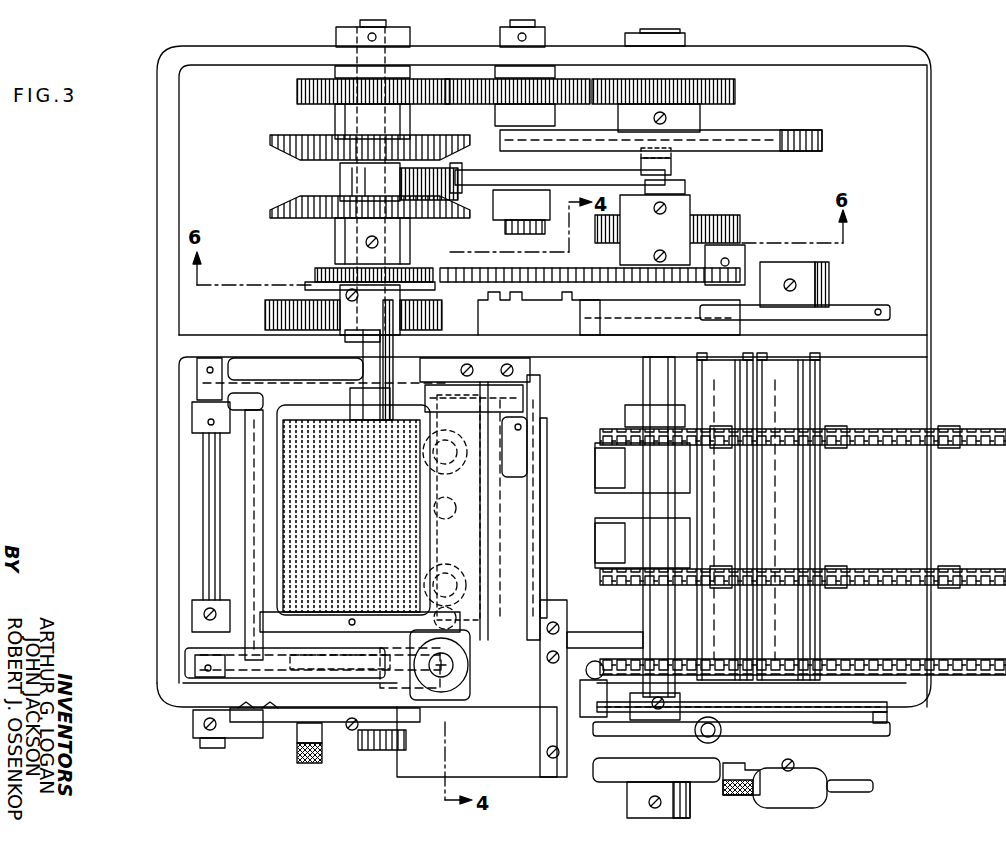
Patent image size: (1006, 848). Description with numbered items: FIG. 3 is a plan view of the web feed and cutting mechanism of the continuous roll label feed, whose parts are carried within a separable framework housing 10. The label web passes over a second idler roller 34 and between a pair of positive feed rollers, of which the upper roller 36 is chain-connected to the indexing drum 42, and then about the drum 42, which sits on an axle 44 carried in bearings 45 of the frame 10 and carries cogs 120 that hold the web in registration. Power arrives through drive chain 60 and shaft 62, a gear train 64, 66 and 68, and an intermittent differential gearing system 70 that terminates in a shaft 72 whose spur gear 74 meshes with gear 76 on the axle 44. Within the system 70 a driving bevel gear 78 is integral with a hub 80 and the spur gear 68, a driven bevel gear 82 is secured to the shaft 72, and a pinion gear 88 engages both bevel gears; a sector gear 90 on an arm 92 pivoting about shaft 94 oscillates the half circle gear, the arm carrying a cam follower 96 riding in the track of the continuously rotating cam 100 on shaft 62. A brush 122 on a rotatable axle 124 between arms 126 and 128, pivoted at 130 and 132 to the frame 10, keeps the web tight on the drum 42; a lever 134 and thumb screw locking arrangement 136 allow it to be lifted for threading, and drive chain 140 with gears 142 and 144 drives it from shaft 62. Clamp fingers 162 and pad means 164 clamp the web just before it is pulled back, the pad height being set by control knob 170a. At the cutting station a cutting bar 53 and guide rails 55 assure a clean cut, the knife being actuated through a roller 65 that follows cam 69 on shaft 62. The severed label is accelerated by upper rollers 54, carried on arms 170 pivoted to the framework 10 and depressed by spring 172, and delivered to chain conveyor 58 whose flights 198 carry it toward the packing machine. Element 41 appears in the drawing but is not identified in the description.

The framework housing 10 is at (930, 347).
The second idler roller 34 is at (812, 507).
The upper feed roller 36 is at (706, 492).
The flange 41 is at (305, 288).
The indexing drum 42 is at (250, 527).
The axle 44 is at (345, 336).
The bearings 45 is at (298, 668).
The cutting bar 53 is at (470, 375).
The upper rollers 54 is at (636, 512).
The guide rails 55 is at (418, 395).
The chain conveyor 58 is at (872, 440).
The drive chain 60 is at (962, 660).
The shaft 62 is at (684, 36).
The gear 64 is at (736, 97).
The roller 65 is at (596, 762).
The gear 66 is at (572, 98).
The spur gear 68 is at (298, 92).
The cam 69 is at (697, 773).
The intermittent differential gearing system 70 is at (286, 186).
The shaft 72 is at (386, 26).
The spur gear 74 is at (395, 335).
The gear 76 is at (266, 317).
The driving bevel gear 78 is at (312, 158).
The hub 80 is at (342, 116).
The driven bevel gear 82 is at (282, 216).
The pinion gear 88 is at (342, 183).
The sector gear 90 is at (458, 188).
The arm 92 is at (462, 172).
The shaft 94 is at (508, 230).
The cam follower 96 is at (640, 164).
The cam 100 is at (822, 141).
The cogs 120 is at (400, 652).
The brush 122 is at (480, 548).
The rotatable axle 124 is at (418, 672).
The arm 126 is at (322, 634).
The arm 128 is at (286, 390).
The pivot 130 is at (226, 676).
The pivot 132 is at (205, 378).
The lever 134 is at (278, 724).
The thumb screw locking arrangement 136 is at (300, 752).
The drive chain 140 is at (328, 268).
The spur gear 142 is at (640, 235).
The gear 144 is at (731, 226).
The clamp fingers 162 is at (455, 445).
The pad means 164 is at (457, 482).
The arms 170 is at (842, 312).
The control knob 170a is at (440, 708).
The spring 172 is at (880, 736).
The flights 198 is at (950, 446).